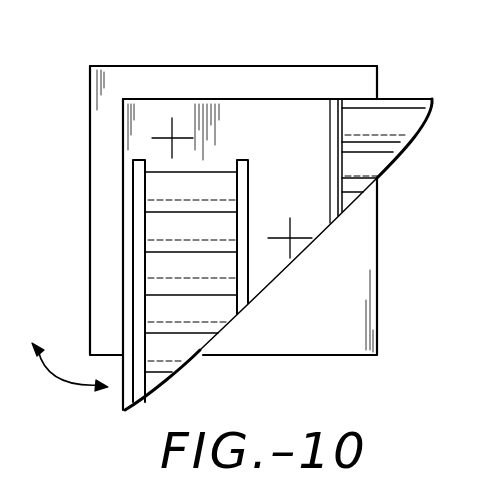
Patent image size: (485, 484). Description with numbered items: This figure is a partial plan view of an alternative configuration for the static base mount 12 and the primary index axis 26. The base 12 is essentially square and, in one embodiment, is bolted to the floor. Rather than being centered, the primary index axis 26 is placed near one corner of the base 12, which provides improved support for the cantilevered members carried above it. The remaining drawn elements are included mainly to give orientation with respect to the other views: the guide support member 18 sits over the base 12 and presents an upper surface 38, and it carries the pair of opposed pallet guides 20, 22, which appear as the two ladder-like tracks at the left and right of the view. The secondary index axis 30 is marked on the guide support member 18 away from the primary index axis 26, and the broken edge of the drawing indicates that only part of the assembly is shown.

The static base mount 12 is at (90, 100).
The guide support member 18 is at (275, 66).
The pallet guide 20 is at (123, 253).
The pallet guide 22 is at (325, 203).
The primary index axis 26 is at (173, 138).
The secondary index axis 30 is at (290, 240).
The upper surface 38 is at (279, 146).